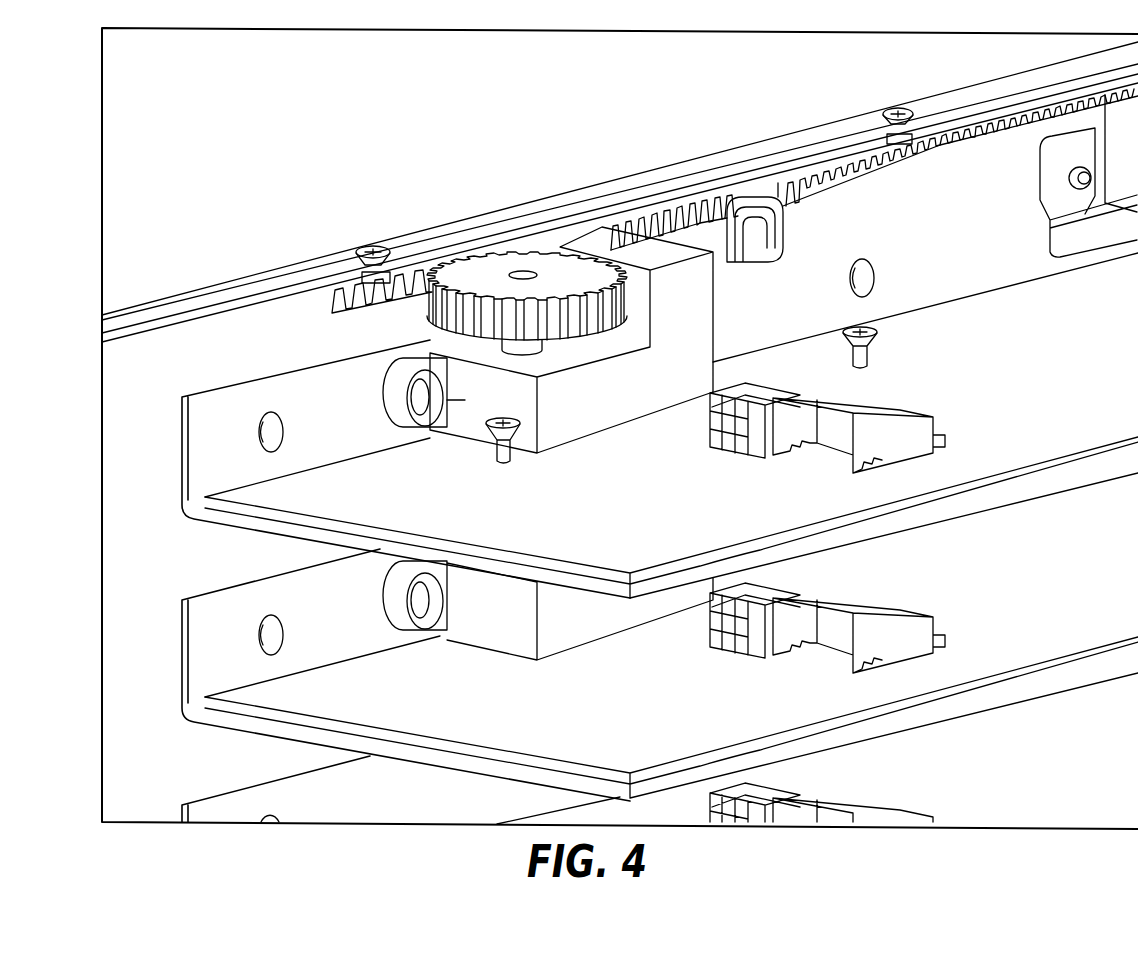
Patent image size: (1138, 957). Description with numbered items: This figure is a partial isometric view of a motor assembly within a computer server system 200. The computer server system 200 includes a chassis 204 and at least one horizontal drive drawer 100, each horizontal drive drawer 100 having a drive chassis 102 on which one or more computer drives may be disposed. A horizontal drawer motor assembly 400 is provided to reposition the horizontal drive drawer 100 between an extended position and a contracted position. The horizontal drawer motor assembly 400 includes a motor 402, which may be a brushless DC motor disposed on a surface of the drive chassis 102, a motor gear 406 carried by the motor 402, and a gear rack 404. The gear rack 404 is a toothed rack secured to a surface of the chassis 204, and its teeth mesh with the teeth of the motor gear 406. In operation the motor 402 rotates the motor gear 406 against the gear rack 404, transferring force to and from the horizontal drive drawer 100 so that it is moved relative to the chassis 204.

The horizontal drive drawer 100 is at (930, 362).
The drive chassis 102 is at (965, 193).
The computer server system 200 is at (228, 118).
The chassis 204 is at (318, 270).
The horizontal drawer motor assembly 400 is at (404, 198).
The motor 402 is at (408, 393).
The gear rack 404 is at (425, 280).
The motor gear 406 is at (493, 265).